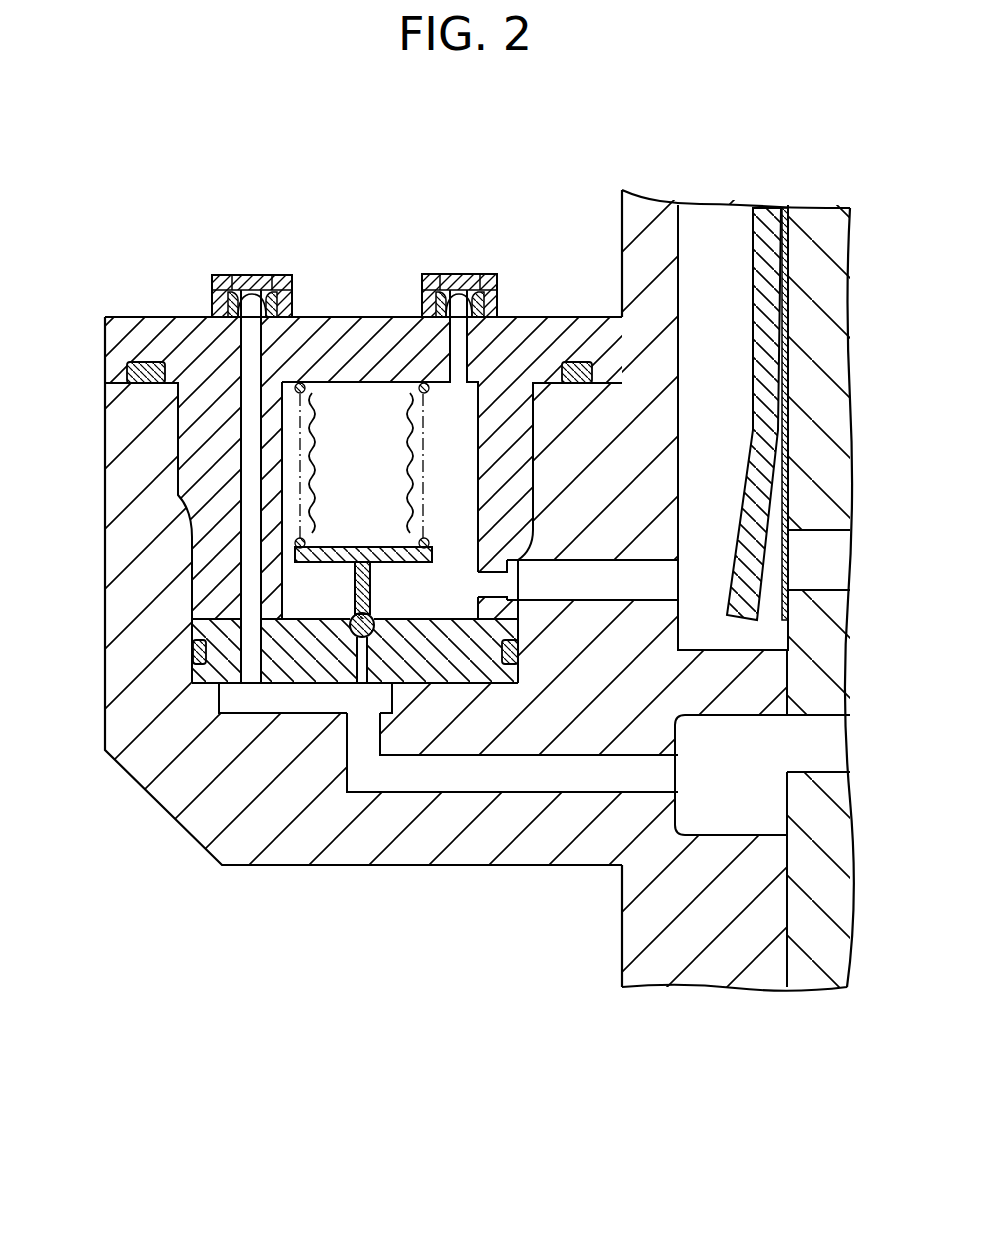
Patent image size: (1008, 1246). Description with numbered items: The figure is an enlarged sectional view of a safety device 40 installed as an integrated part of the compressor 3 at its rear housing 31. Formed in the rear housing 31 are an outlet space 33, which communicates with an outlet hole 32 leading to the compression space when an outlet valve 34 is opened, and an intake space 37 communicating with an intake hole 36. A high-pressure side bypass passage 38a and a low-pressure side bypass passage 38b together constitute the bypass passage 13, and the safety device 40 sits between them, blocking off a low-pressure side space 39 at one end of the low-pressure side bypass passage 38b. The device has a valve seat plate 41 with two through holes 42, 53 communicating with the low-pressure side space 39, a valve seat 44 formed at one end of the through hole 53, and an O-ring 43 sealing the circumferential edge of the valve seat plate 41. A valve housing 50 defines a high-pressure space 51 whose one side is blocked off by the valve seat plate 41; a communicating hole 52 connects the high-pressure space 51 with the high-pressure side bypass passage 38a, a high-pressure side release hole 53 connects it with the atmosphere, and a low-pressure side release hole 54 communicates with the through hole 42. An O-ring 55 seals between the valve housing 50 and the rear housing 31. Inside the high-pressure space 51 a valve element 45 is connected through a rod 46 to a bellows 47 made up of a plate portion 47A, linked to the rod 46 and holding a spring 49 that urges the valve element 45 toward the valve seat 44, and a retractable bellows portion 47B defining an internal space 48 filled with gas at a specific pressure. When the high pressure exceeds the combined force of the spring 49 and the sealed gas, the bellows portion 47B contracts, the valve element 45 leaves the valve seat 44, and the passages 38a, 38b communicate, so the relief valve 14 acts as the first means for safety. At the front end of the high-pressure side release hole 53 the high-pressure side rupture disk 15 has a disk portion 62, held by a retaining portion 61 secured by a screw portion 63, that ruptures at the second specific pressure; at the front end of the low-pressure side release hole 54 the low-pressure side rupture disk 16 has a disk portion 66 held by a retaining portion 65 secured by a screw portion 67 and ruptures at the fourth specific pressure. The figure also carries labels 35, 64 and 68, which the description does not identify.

The compressor 3 is at (710, 596).
The bypass passage 13 is at (585, 590).
The relief valve 14 is at (360, 293).
The high-pressure side rupture disk 15 is at (450, 216).
The low-pressure side rupture disk 16 is at (262, 216).
The rear housing 31 is at (715, 932).
The outlet hole 32 is at (822, 563).
The outlet space 33 is at (713, 258).
The outlet valve 34 is at (788, 480).
The valve spool 35 is at (767, 427).
The intake hole 36 is at (830, 748).
The intake space 37 is at (740, 797).
The high-pressure side bypass passage 38a is at (628, 580).
The low-pressure side bypass passage 38b is at (435, 772).
The low-pressure side space 39 is at (292, 697).
The safety device 40 is at (241, 216).
The valve seat plate 41 is at (284, 744).
The through hole 42 is at (248, 660).
The O-ring 43 is at (207, 660).
The valve seat 44 is at (347, 634).
The valve element 45 is at (374, 621).
The rod 46 is at (355, 586).
The bellows 47 is at (382, 475).
The plate portion 47A is at (363, 547).
The bellows portion 47B is at (318, 448).
The internal space 48 is at (373, 496).
The spring 49 is at (432, 443).
The valve housing 50 is at (208, 537).
The high-pressure space 51 is at (430, 614).
The communicating hole 52 is at (488, 585).
The high-pressure side release hole 53 is at (460, 352).
The low-pressure side release hole 54 is at (248, 447).
The O-ring 55 is at (132, 390).
The retaining portion 61 is at (488, 276).
The disk portion 62 is at (443, 273).
The screw portion 63 is at (418, 274).
The seal 64 is at (432, 300).
The retaining portion 65 is at (287, 292).
The disk portion 66 is at (247, 278).
The screw portion 67 is at (215, 280).
The seal 68 is at (254, 312).